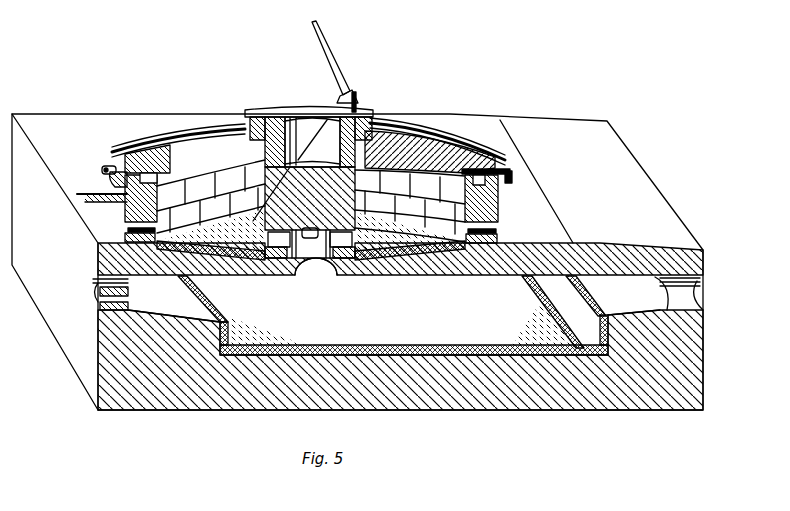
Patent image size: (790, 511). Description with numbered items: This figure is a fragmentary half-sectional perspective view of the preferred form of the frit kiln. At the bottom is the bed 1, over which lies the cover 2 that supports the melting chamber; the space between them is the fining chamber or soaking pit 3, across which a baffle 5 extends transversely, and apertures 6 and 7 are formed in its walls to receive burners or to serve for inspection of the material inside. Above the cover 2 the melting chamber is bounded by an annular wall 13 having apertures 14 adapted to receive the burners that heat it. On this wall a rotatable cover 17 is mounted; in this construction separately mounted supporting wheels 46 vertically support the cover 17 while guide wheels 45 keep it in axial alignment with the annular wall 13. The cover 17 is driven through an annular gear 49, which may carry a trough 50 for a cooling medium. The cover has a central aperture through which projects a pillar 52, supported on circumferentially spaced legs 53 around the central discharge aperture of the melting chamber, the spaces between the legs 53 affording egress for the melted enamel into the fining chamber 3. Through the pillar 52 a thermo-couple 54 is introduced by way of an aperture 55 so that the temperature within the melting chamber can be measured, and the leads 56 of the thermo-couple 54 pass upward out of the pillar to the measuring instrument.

The bed 1 is at (491, 404).
The cover 2 is at (553, 250).
The fining chamber or soaking pit 3 is at (394, 329).
The baffle 5 is at (535, 288).
The aperture 6 is at (110, 298).
The aperture 7 is at (100, 277).
The annular wall 13 is at (488, 211).
The apertures 14 is at (128, 231).
The cover 17 is at (417, 150).
The guide wheels 45 is at (110, 182).
The supporting wheels 46 is at (108, 165).
The annular gear 49 is at (467, 145).
The trough 50 is at (510, 170).
The pillar 52 is at (290, 108).
The legs 53 is at (270, 236).
The thermo-couple 54 is at (312, 141).
The aperture 55 is at (278, 193).
The leads 56 is at (328, 76).